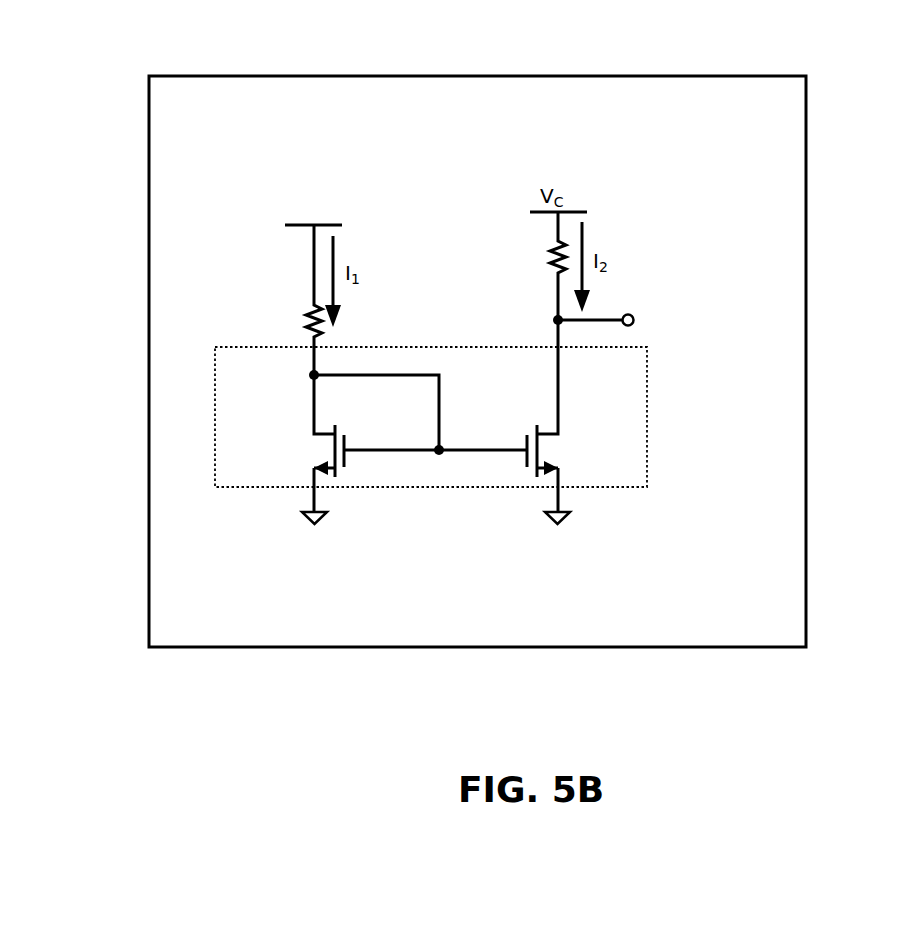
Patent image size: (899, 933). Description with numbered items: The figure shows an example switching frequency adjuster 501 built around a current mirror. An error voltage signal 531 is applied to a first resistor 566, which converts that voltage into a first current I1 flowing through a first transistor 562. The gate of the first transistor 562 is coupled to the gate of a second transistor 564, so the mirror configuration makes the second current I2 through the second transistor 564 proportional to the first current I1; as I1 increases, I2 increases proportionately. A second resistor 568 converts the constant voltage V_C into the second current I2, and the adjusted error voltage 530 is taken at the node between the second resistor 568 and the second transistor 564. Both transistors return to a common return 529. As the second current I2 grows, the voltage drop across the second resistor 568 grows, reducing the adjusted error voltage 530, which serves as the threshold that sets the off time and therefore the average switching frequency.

The switching frequency adjuster 501 is at (143, 68).
The error voltage signal 531 is at (306, 188).
The first resistor 566 is at (260, 315).
The second resistor 568 is at (507, 250).
The adjusted error voltage 530 is at (685, 306).
The first transistor 562 is at (280, 432).
The second transistor 564 is at (595, 440).
The common return 529 is at (545, 526).